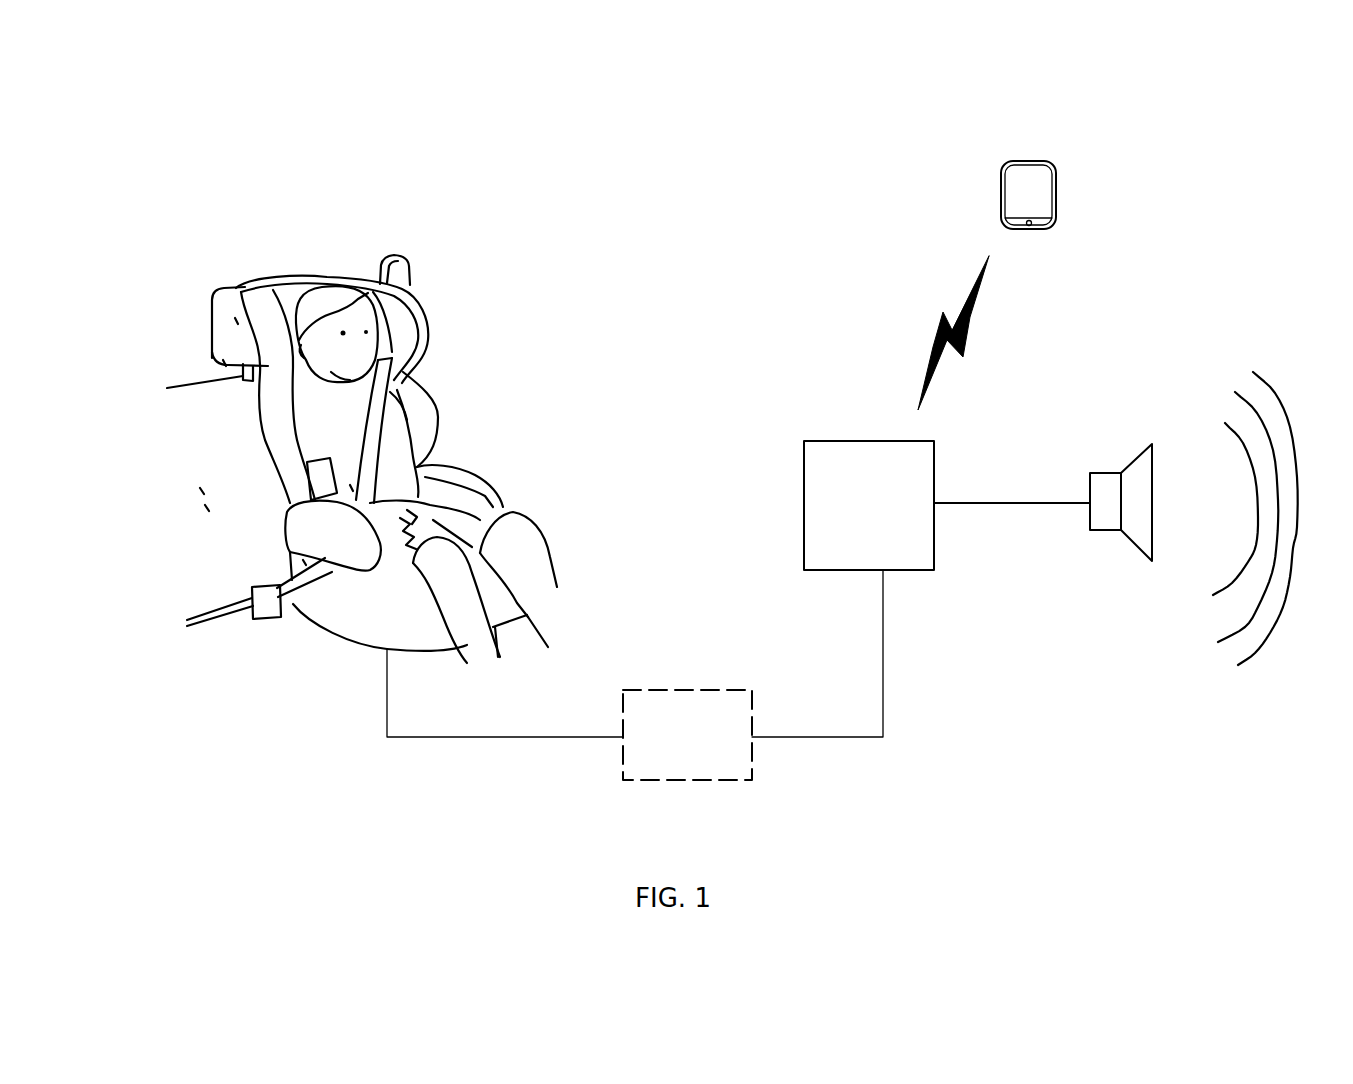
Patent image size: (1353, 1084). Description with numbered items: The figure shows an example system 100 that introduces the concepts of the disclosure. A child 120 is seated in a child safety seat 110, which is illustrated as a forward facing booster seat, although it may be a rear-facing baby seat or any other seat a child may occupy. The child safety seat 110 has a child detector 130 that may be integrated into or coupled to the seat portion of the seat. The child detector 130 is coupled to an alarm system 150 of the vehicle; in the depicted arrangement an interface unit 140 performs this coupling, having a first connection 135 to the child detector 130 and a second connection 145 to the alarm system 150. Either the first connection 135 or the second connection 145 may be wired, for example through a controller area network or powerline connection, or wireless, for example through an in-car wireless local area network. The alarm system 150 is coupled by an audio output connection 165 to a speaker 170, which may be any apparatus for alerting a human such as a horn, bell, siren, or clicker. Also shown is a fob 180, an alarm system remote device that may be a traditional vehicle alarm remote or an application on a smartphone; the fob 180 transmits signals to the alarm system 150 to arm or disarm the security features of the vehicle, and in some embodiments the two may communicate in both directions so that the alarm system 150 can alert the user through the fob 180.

The system 100 is at (158, 100).
The child safety seat 110 is at (362, 292).
The child 120 is at (558, 590).
The child detector 130 is at (372, 608).
The first connection 135 is at (463, 738).
The interface unit 140 is at (678, 690).
The second connection 145 is at (818, 738).
The alarm system 150 is at (883, 441).
The audio output connection 165 is at (1006, 506).
The speaker 170 is at (1103, 473).
The fob 180 is at (1030, 161).